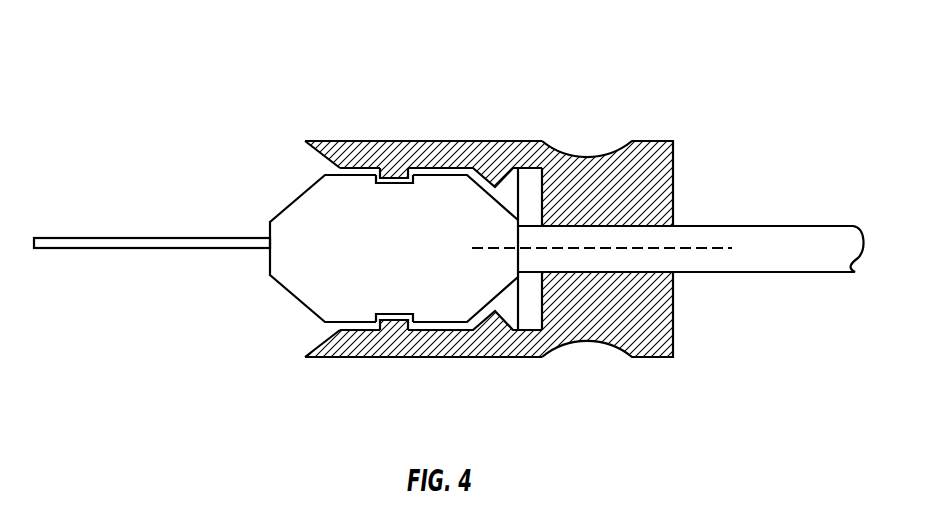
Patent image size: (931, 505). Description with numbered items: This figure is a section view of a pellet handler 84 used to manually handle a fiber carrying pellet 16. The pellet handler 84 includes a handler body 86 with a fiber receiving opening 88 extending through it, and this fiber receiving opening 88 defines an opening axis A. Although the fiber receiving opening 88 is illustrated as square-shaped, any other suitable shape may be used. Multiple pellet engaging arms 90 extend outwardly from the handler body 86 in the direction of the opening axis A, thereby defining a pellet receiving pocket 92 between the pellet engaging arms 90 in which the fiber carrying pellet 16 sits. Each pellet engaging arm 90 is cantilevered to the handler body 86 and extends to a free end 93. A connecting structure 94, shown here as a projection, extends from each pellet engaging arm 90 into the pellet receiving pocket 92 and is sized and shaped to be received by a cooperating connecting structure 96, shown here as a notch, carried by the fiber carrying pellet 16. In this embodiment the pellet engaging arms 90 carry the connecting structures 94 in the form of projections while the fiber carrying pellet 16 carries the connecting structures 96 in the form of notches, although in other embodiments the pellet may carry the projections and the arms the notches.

The fiber carrying pellet 16 is at (292, 168).
The pellet receiving pocket 92 is at (248, 196).
The connecting structure 96 is at (392, 184).
The pellet handler 84 is at (530, 100).
The pellet engaging arm 90 is at (365, 140).
The free end 93 is at (313, 140).
The connecting structure 94 is at (398, 172).
The handler body 86 is at (640, 140).
The fiber receiving opening 88 is at (637, 220).
The opening axis A is at (714, 250).